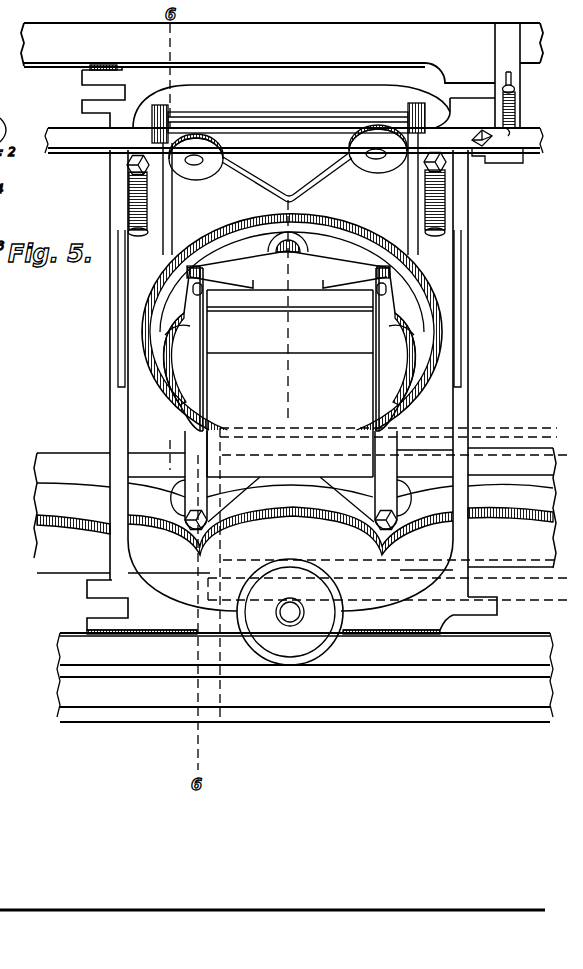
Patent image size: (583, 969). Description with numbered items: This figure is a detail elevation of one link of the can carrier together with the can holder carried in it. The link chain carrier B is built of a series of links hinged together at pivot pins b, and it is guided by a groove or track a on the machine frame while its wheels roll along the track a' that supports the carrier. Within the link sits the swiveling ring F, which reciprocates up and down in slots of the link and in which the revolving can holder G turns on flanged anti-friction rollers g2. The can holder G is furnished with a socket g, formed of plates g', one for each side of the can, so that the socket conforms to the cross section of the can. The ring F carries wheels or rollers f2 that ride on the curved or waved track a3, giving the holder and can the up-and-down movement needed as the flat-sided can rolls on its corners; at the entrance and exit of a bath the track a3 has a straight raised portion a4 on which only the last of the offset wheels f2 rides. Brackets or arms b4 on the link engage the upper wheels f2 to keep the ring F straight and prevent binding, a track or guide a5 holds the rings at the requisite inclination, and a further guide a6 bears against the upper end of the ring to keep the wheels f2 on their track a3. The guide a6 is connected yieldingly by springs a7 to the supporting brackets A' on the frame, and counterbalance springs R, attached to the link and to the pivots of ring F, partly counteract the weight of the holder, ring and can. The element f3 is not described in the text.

The guide groove or track a is at (287, 372).
The track a' is at (305, 651).
The supporting bracket A' is at (498, 75).
The spring a7 is at (517, 108).
The pivot pin b is at (95, 93).
The guide or track a6 is at (294, 144).
The link chain carrier B is at (30, 432).
The swiveling ring F is at (163, 277).
The wheel or roller f2 is at (394, 498).
The counterbalance spring R is at (128, 180).
The bracket or arm b4 is at (479, 188).
The anti-friction roller g2 is at (298, 232).
The socket g is at (288, 361).
The plate g' is at (291, 398).
The revolving can holder G is at (290, 349).
The curved or waved track a3 is at (295, 510).
The straight portion of track a4 is at (173, 518).
The track or guide a5 is at (283, 528).
The wheel f3 is at (290, 612).